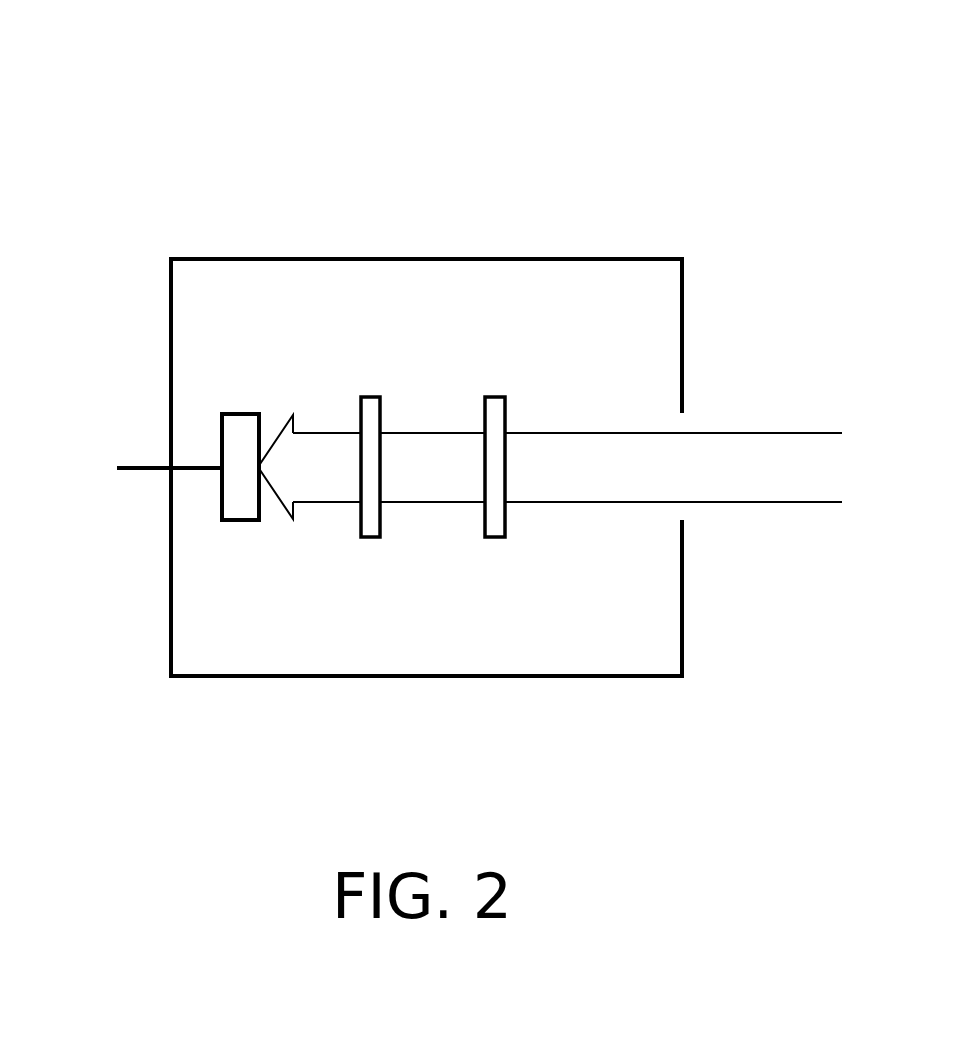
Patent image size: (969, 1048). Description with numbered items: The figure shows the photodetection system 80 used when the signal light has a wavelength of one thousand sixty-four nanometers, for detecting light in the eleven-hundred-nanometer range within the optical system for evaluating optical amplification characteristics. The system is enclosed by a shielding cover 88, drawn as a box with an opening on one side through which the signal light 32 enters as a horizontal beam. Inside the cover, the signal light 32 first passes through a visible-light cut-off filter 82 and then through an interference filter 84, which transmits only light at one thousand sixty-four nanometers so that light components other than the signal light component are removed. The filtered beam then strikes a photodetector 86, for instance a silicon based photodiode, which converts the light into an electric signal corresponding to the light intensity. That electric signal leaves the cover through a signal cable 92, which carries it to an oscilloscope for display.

The photodetection system 80 is at (578, 153).
The shielding cover 88 is at (674, 258).
The signal light 32 is at (752, 450).
The visible-light cut-off filter 82 is at (488, 412).
The interference filter 84 is at (367, 407).
The photodetector 86 is at (238, 442).
The signal cable 92 is at (143, 463).